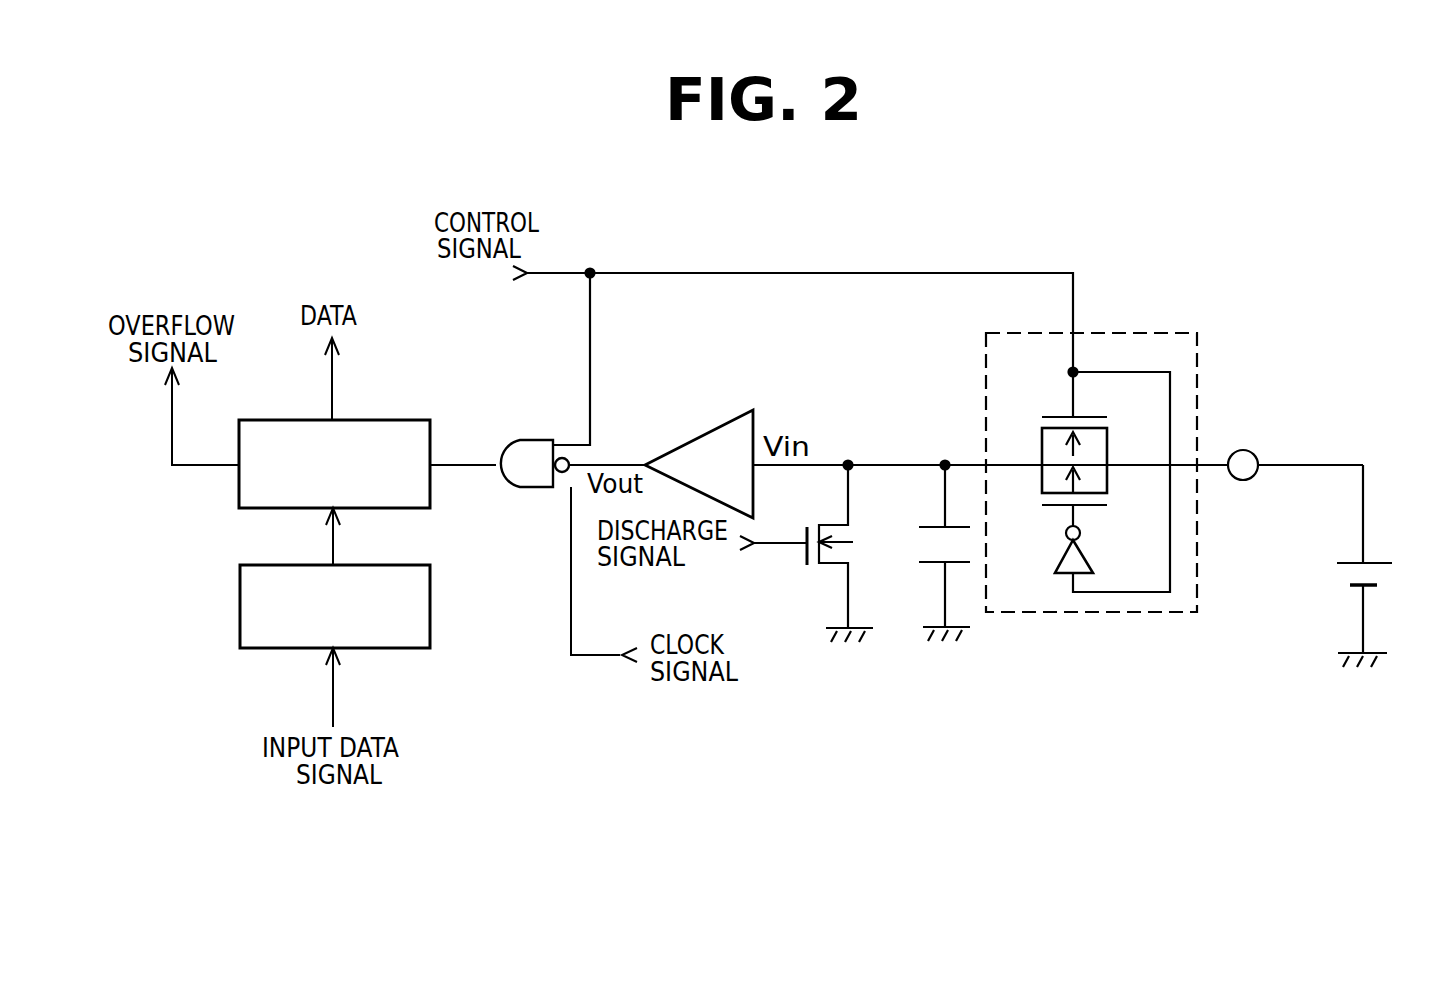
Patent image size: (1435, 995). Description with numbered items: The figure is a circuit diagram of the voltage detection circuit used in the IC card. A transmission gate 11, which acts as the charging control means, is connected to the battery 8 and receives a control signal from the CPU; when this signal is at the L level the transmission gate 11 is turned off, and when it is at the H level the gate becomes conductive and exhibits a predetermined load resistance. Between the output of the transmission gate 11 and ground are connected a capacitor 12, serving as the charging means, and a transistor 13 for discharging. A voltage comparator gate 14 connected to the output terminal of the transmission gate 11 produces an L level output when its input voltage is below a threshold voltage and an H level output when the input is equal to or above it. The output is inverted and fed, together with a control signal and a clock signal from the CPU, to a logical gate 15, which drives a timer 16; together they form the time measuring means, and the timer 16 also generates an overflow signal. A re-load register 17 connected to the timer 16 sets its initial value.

The battery 8 is at (1370, 560).
The transmission gate 11 is at (1113, 330).
The capacitor 12 is at (958, 565).
The transistor 13 is at (850, 535).
The voltage comparator gate 14 is at (731, 418).
The logical gate 15 is at (537, 440).
The timer 16 is at (363, 420).
The re-load register 17 is at (358, 565).